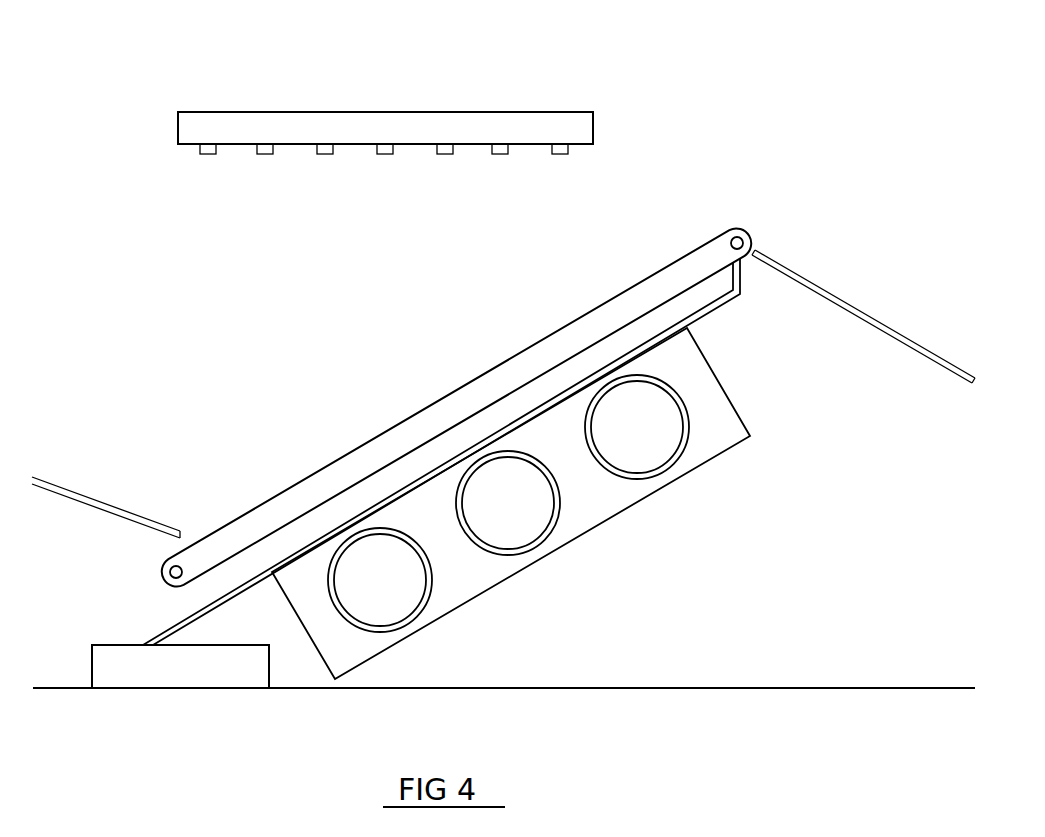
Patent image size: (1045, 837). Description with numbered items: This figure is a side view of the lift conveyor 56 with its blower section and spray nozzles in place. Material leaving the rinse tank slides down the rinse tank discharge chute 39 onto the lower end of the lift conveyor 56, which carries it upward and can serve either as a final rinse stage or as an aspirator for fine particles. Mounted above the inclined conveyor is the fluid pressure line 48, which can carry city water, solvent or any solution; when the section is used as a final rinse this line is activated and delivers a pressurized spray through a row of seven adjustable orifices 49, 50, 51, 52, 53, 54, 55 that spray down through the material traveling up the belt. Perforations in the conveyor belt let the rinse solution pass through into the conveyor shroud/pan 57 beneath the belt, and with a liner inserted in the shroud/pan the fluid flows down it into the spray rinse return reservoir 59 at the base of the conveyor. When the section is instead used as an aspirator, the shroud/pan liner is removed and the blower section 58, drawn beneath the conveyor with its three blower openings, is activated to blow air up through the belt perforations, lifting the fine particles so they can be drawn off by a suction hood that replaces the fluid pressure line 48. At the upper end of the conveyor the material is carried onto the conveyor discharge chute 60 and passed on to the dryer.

The rinse tank discharge chute 39 is at (143, 512).
The fluid pressure line 48 is at (442, 110).
The adjustable orifice 49 is at (549, 157).
The adjustable orifice 50 is at (489, 157).
The adjustable orifice 51 is at (434, 157).
The adjustable orifice 52 is at (374, 157).
The adjustable orifice 53 is at (314, 157).
The adjustable orifice 54 is at (254, 157).
The adjustable orifice 55 is at (197, 157).
The lift conveyor 56 is at (483, 373).
The conveyor shroud/pan 57 is at (687, 308).
The blower section 58 is at (579, 506).
The spray rinse return reservoir 59 is at (140, 643).
The conveyor discharge chute 60 is at (800, 272).